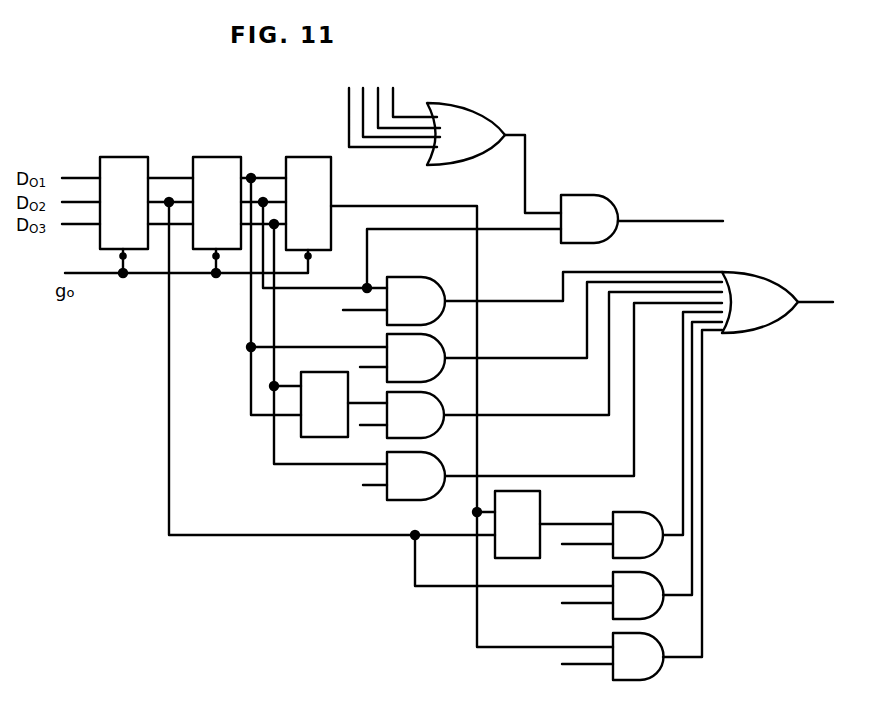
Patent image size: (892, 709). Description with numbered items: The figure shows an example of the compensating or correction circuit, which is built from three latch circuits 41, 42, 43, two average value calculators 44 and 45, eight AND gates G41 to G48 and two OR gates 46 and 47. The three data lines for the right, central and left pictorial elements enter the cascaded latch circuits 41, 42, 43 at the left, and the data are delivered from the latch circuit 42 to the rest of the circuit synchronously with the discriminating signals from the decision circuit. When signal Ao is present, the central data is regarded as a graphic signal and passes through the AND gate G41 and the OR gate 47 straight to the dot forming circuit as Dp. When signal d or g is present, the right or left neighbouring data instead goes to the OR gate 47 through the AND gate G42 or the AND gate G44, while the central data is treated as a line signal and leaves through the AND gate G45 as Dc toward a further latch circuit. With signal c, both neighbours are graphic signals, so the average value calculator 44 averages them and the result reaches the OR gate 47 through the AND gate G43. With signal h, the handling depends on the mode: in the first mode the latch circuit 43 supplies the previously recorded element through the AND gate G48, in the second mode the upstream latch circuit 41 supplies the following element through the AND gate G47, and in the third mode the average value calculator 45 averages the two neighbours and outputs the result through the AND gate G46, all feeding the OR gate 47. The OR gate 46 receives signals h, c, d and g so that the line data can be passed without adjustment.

The latch circuit 41 is at (117, 164).
The latch circuit 42 is at (210, 164).
The latch circuit 43 is at (298, 166).
The average value calculator 44 is at (319, 432).
The average value calculator 45 is at (529, 521).
The OR gate 46 is at (472, 124).
The OR gate 47 is at (752, 324).
The AND gate G41 is at (517, 290).
The AND gate G42 is at (536, 333).
The AND gate G43 is at (536, 366).
The AND gate G44 is at (532, 401).
The AND gate G45 is at (660, 209).
The AND gate G46 is at (635, 438).
The AND gate G47 is at (633, 473).
The AND gate G48 is at (633, 509).